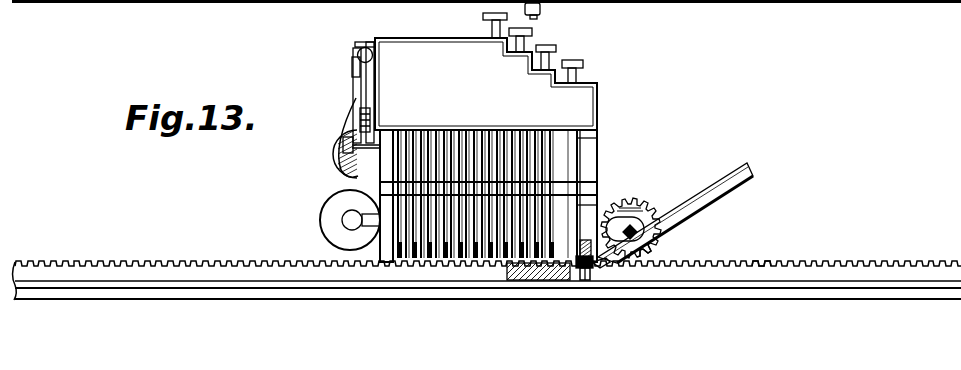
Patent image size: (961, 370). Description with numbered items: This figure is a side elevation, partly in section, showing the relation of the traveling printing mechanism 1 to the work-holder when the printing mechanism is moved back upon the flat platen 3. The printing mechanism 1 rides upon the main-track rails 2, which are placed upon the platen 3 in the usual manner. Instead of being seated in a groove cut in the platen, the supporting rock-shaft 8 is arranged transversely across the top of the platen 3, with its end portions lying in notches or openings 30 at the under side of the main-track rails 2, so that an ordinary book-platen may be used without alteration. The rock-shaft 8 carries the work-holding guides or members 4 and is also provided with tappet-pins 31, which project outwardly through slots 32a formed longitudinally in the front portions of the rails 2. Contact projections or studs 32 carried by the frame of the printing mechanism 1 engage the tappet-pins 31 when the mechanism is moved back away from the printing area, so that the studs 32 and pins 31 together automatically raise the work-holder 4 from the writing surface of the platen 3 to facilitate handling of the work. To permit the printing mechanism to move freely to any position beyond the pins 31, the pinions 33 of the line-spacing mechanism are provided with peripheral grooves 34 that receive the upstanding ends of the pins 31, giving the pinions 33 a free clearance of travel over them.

The traveling machine or printing mechanism 1 is at (458, 132).
The main-track rails 2 is at (824, 264).
The flat platen 3 is at (913, 290).
The work-holding guides or members 4 is at (703, 207).
The supporting rock-shaft 8 is at (592, 270).
The notches or openings 30 is at (586, 271).
The tappet-pins 31 is at (568, 278).
The contact projections or studs 32 is at (578, 259).
The slots 32a is at (773, 256).
The pinions 33 is at (660, 251).
The peripheral grooves 34 is at (632, 206).